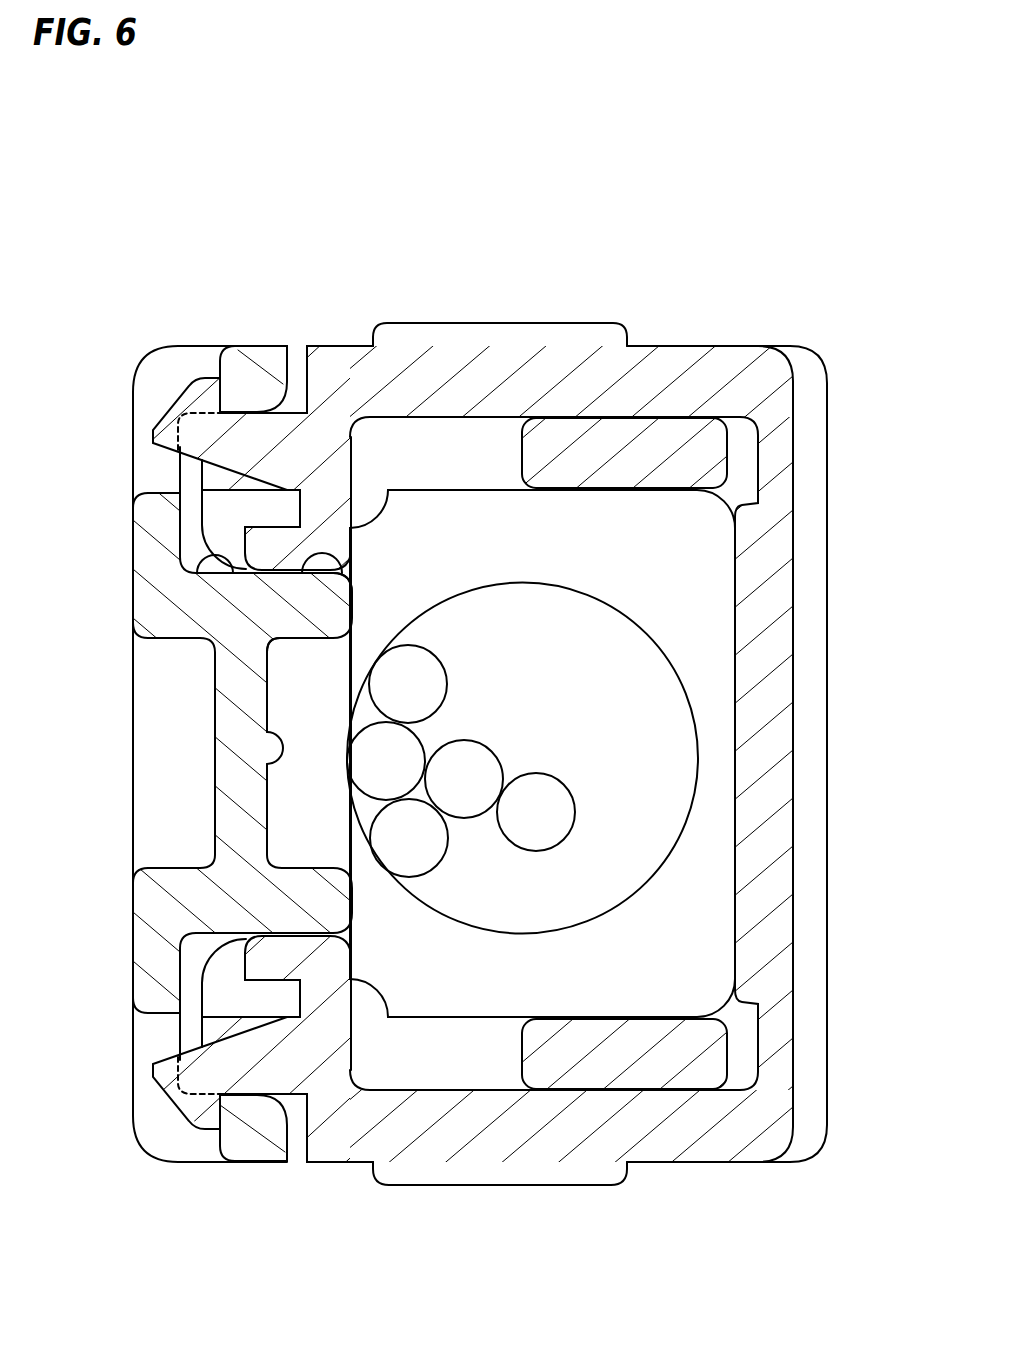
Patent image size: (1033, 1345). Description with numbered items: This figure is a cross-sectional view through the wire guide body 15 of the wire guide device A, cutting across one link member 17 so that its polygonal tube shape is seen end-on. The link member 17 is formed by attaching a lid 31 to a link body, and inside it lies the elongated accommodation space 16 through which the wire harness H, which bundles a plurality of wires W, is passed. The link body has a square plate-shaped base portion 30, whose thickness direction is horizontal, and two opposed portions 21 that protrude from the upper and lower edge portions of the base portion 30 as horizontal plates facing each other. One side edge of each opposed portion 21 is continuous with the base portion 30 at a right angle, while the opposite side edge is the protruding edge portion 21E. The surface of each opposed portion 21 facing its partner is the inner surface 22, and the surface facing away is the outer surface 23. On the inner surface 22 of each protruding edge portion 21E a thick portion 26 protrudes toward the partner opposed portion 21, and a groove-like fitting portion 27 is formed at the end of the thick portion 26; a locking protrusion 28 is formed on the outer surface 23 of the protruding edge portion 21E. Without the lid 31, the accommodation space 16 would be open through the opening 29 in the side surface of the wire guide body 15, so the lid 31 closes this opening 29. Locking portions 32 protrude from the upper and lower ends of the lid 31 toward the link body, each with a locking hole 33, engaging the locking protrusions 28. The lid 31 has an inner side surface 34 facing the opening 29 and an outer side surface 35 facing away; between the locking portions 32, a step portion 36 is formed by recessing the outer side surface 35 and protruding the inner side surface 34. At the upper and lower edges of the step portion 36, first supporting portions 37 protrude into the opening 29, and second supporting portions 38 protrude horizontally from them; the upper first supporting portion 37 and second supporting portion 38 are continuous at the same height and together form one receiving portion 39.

The wire guide body 15 is at (838, 285).
The accommodation space 16 is at (577, 492).
The link member 17 is at (105, 326).
The opposed portion 21 is at (590, 365).
The protruding edge portion 21E is at (317, 357).
The inner surface 22 is at (641, 428).
The outer surface 23 is at (528, 344).
The thick portion 26 is at (322, 509).
The fitting portion 27 is at (252, 488).
The locking protrusion 28 is at (192, 392).
The opening 29 is at (299, 935).
The base portion 30 is at (780, 738).
The lid 31 is at (152, 613).
The locking portion 32 is at (250, 372).
The locking hole 33 is at (222, 370).
The inner side surface 34 is at (270, 760).
The outer side surface 35 is at (210, 793).
The step portion 36 is at (237, 826).
The first supporting portion 37 is at (233, 566).
The second supporting portion 38 is at (344, 566).
The receiving portion 39 is at (55, 643).
The wire guide device A is at (97, 228).
The wires W is at (550, 813).
The wire harness H is at (671, 908).